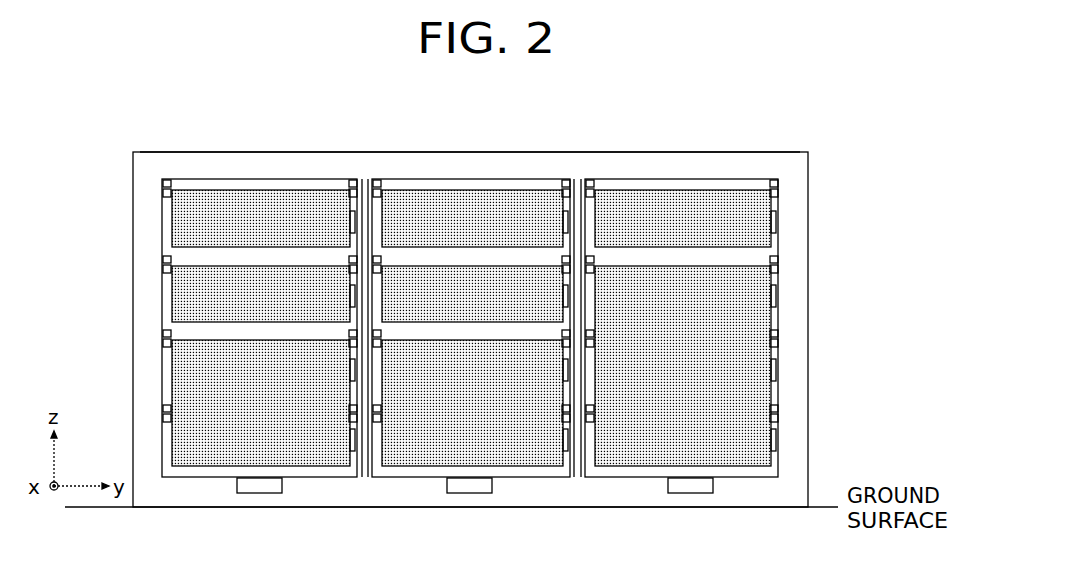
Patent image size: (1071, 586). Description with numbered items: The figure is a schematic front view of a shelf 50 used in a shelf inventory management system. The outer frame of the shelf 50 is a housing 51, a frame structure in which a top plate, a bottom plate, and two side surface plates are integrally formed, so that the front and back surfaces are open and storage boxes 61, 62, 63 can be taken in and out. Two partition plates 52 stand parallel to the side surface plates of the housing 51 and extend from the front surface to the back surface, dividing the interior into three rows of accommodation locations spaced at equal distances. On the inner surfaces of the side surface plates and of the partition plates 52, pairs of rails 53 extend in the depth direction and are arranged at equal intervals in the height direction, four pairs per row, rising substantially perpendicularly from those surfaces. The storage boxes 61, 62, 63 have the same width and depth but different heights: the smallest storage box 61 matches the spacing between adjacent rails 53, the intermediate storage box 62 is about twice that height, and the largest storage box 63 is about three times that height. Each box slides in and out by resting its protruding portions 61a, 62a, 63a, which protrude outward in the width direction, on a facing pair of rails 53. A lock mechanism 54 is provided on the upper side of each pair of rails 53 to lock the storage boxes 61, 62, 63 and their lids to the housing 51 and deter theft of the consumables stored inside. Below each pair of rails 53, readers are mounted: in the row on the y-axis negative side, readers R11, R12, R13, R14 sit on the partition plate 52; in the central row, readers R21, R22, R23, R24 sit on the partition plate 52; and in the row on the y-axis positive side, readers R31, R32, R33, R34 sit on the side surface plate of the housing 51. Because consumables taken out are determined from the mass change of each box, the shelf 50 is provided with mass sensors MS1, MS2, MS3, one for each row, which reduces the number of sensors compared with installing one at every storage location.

The shelf 50 is at (809, 130).
The housing 51 is at (198, 158).
The partition plate 52 is at (365, 178).
The rail 53 is at (778, 199).
The lock mechanism 54 is at (780, 184).
The storage box 61 is at (271, 232).
The protruding portion 61a is at (163, 190).
The storage box 62 is at (271, 406).
The protruding portion 62a is at (163, 342).
The storage box 63 is at (695, 389).
The protruding portion 63a is at (778, 267).
The reader R11 is at (349, 219).
The reader R12 is at (349, 293).
The reader R13 is at (349, 367).
The reader R14 is at (349, 437).
The reader R21 is at (562, 219).
The reader R22 is at (562, 293).
The reader R23 is at (562, 367).
The reader R24 is at (562, 437).
The reader R31 is at (770, 219).
The reader R32 is at (770, 293).
The reader R33 is at (770, 367).
The reader R34 is at (770, 437).
The mass sensor MS1 is at (259, 494).
The mass sensor MS2 is at (469, 494).
The mass sensor MS3 is at (690, 494).